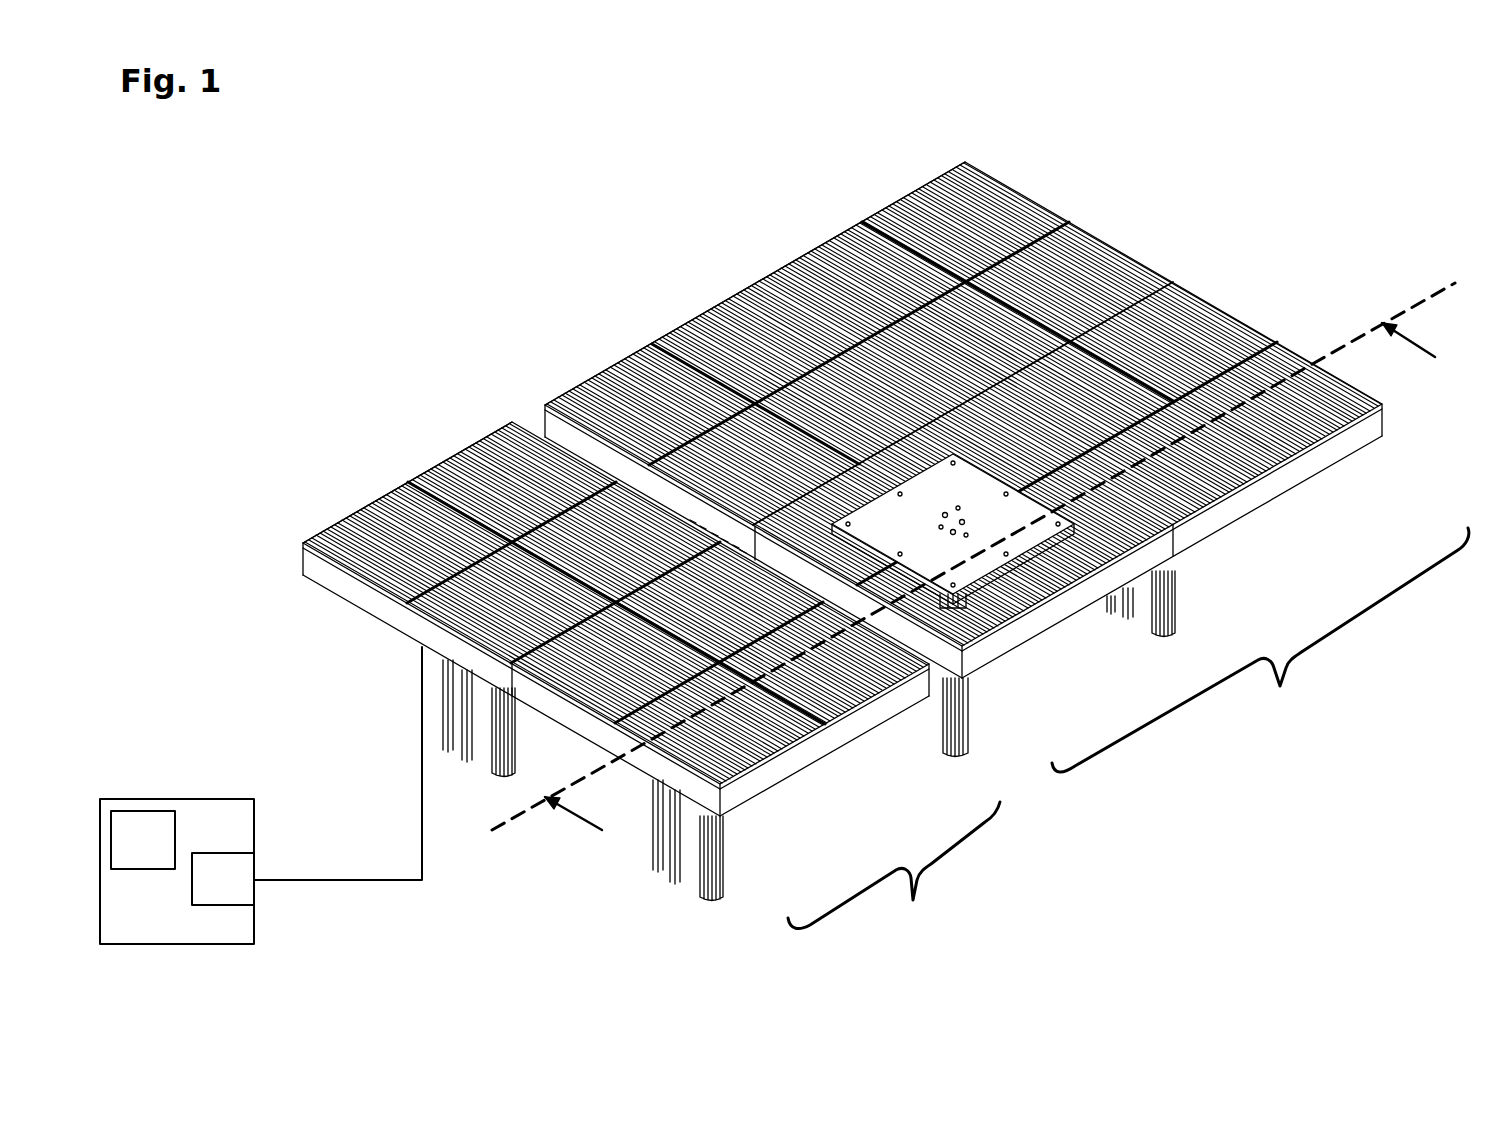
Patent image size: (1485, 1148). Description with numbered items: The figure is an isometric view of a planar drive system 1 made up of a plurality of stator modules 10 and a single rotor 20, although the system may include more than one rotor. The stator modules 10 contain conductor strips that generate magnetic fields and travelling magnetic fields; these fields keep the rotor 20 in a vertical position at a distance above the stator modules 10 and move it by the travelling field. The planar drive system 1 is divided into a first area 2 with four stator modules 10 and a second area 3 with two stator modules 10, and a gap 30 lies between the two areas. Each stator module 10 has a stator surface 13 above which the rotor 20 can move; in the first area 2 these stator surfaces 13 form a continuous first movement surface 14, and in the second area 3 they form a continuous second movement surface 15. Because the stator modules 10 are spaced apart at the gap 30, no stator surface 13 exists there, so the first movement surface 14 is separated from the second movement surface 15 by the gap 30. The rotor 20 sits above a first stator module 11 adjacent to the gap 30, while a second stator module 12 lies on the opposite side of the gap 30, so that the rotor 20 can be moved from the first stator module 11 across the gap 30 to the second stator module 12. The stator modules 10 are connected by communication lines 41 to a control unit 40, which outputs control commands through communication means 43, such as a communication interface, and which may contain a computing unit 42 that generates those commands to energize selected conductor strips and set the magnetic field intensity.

The planar drive system 1 is at (784, 499).
The first area 2 is at (1007, 433).
The second area 3 is at (640, 659).
The stator module 10 is at (842, 512).
The first stator module 11 is at (963, 569).
The second stator module 12 is at (865, 730).
The stator surface 13 is at (1008, 173).
The first movement surface 14 is at (885, 204).
The second movement surface 15 is at (377, 494).
The rotor 20 is at (872, 536).
The gap 30 is at (587, 427).
The control unit 40 is at (128, 930).
The communication line 41 is at (338, 763).
The computing unit 42 is at (128, 854).
The communication means 43 is at (208, 893).